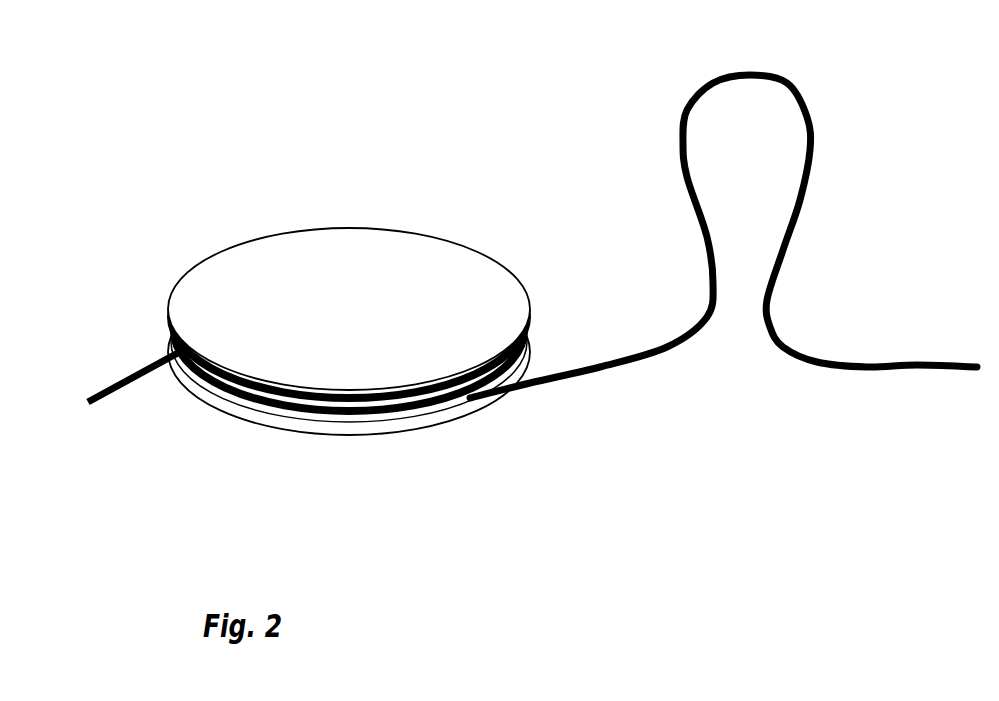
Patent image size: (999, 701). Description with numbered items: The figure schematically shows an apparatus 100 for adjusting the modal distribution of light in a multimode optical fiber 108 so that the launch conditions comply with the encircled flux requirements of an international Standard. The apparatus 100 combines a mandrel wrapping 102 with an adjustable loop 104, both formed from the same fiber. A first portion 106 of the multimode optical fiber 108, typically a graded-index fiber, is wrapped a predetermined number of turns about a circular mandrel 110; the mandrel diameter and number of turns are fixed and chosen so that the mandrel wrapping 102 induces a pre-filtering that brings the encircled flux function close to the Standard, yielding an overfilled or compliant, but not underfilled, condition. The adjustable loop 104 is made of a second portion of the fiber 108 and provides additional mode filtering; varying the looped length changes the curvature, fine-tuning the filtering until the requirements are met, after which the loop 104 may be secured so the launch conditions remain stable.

The apparatus 100 is at (250, 115).
The mandrel wrapping 102 is at (418, 234).
The adjustable loop 104 is at (810, 117).
The first portion 106 is at (232, 395).
The multimode optical fiber 108 is at (115, 383).
The circular mandrel 110 is at (372, 422).